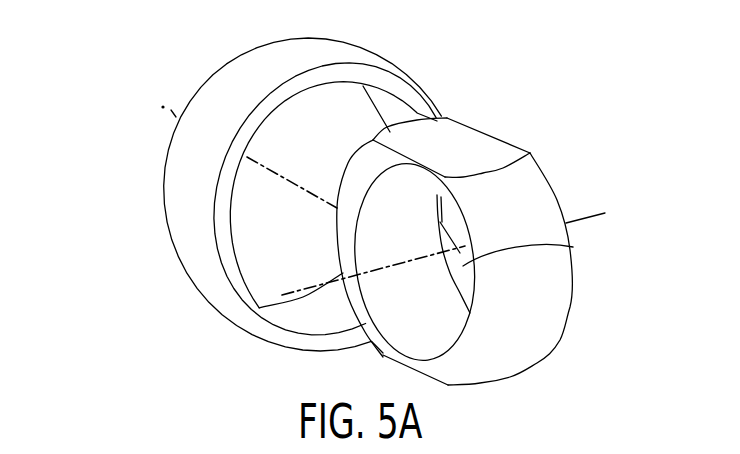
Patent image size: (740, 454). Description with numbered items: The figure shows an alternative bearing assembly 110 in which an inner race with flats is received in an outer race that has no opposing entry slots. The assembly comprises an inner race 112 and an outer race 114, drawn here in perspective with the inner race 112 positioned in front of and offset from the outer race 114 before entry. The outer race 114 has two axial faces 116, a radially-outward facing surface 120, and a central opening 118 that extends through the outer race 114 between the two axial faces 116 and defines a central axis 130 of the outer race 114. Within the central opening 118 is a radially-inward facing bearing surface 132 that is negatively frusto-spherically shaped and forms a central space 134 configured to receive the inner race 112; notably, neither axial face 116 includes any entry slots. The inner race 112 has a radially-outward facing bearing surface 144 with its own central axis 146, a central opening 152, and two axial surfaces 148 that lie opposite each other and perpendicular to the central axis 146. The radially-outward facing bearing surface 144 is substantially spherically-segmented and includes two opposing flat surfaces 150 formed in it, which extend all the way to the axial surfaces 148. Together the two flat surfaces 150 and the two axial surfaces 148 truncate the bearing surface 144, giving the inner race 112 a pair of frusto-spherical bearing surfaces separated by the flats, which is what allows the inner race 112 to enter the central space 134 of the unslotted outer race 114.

The alternative bearing assembly 110 is at (148, 60).
The inner race 112 is at (533, 188).
The outer race 114 is at (173, 182).
The axial faces 116 is at (402, 89).
The central opening 118 is at (247, 240).
The radially-outward facing surface 120 is at (263, 52).
The central axis 130 is at (173, 113).
The radially-inward facing bearing surface 132 is at (317, 322).
The central space 134 is at (361, 117).
The radially-outward facing bearing surface 144 is at (563, 300).
The central axis 146 is at (590, 215).
The axial surfaces 148 is at (462, 363).
The flat surfaces 150 is at (483, 139).
The central opening 152 is at (573, 247).